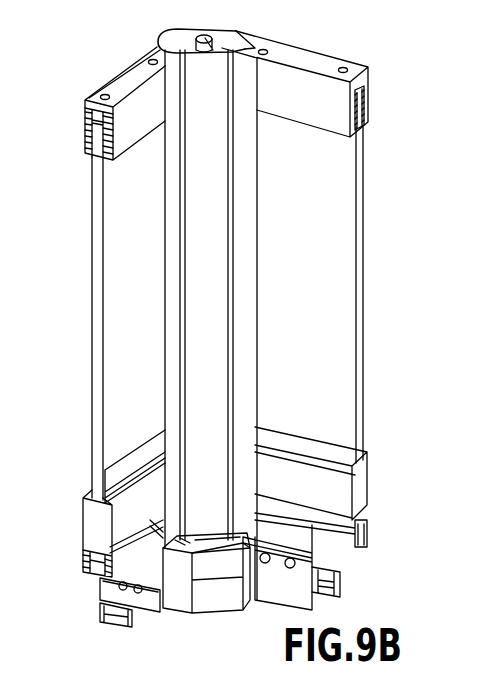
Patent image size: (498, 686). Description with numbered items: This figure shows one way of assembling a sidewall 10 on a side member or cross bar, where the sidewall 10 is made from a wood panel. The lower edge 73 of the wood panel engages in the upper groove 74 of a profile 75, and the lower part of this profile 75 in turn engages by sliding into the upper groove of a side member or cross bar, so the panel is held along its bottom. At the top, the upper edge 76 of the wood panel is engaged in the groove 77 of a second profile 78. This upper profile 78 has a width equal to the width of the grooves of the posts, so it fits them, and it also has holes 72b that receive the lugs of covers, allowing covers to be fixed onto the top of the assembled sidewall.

The sidewall 10 is at (364, 288).
The holes 72b is at (157, 52).
The lower edge 73 is at (87, 495).
The upper groove 74 is at (98, 492).
The profile 75 is at (81, 533).
The upper edge 76 is at (91, 128).
The groove 77 is at (91, 170).
The profile 78 is at (115, 88).